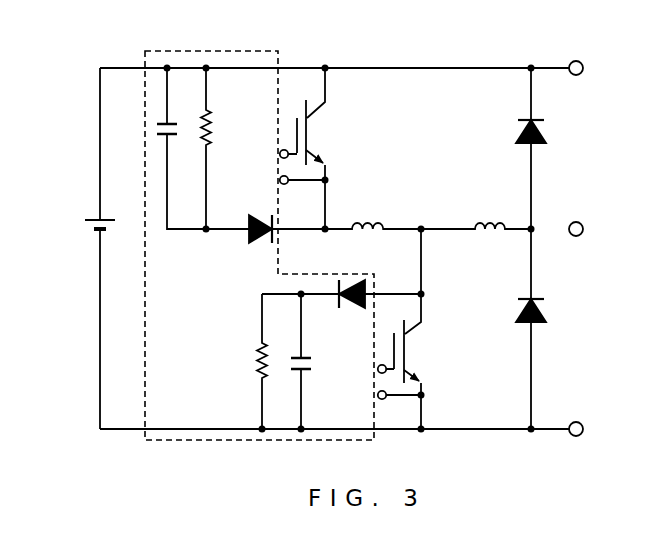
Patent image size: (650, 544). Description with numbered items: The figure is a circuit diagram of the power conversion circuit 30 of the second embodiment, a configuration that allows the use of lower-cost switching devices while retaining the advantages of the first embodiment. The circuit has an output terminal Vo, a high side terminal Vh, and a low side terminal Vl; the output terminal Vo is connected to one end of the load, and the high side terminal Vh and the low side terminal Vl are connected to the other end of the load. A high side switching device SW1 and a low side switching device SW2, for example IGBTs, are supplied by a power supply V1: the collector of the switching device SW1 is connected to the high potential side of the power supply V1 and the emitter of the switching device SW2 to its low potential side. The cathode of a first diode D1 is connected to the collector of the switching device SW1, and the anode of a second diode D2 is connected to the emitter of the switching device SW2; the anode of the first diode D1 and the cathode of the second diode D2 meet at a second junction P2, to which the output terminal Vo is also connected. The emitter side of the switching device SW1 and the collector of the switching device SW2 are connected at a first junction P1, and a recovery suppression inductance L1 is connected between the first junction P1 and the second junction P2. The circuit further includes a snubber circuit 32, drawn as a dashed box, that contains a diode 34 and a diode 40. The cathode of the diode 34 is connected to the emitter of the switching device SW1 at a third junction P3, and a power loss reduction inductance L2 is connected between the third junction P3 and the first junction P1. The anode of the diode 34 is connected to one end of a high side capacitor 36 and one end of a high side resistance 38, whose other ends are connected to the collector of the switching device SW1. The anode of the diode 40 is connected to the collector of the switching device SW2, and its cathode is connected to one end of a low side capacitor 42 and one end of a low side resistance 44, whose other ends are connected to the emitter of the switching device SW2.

The power conversion circuit 30 is at (45, 78).
The snubber circuit 32 is at (248, 51).
The diode 34 is at (253, 210).
The high side capacitor 36 is at (162, 140).
The high side resistance 38 is at (217, 125).
The diode 40 is at (353, 310).
The low side capacitor 42 is at (318, 364).
The low side resistance 44 is at (258, 364).
The high side switching device SW1 is at (323, 136).
The low side switching device SW2 is at (420, 351).
The first diode D1 is at (545, 127).
The second diode D2 is at (545, 306).
The recovery suppression inductance L1 is at (490, 232).
The power loss reduction inductance L2 is at (373, 234).
The first junction P1 is at (424, 232).
The second junction P2 is at (534, 232).
The third junction P3 is at (327, 233).
The power supply V1 is at (86, 227).
The high side terminal Vh is at (593, 69).
The output terminal Vo is at (592, 229).
The low side terminal Vl is at (593, 430).